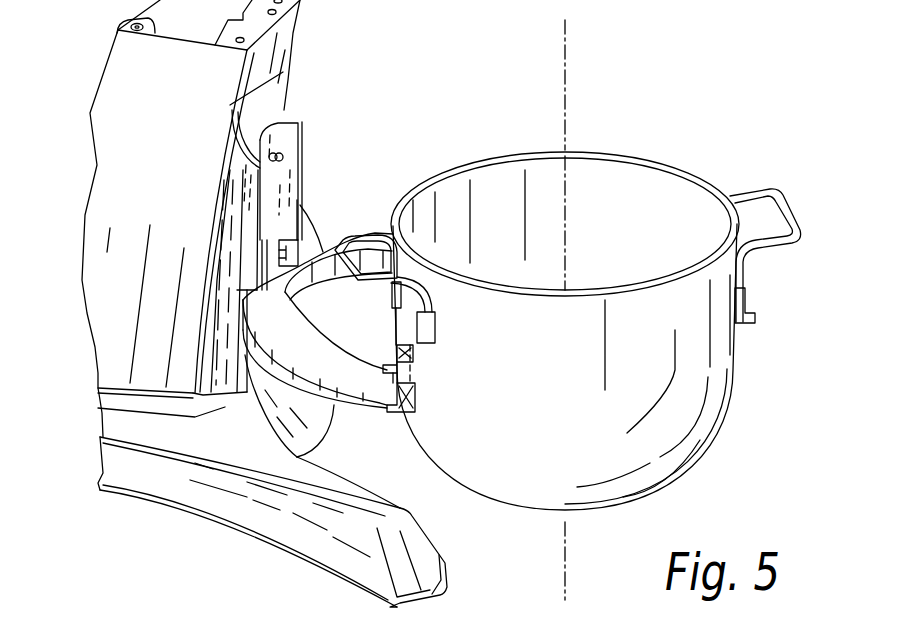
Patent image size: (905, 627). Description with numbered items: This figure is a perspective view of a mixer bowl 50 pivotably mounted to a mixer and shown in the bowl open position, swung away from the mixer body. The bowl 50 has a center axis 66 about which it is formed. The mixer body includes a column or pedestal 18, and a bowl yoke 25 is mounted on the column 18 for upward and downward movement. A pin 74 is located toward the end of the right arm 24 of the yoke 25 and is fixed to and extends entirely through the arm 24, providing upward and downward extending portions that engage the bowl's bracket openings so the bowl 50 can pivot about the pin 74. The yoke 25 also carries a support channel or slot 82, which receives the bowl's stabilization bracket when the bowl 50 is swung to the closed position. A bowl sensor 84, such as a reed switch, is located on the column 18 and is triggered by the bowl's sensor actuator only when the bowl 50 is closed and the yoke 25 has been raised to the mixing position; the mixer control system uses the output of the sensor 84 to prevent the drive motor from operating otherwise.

The mixer body column 18 is at (211, 218).
The arm of bowl yoke 24 is at (255, 410).
The bowl yoke 25 is at (357, 420).
The bowl 50 is at (732, 418).
The center axis 66 is at (567, 60).
The pin 74 is at (412, 343).
The support channel or slot 82 is at (296, 206).
The bowl sensor 84 is at (285, 158).